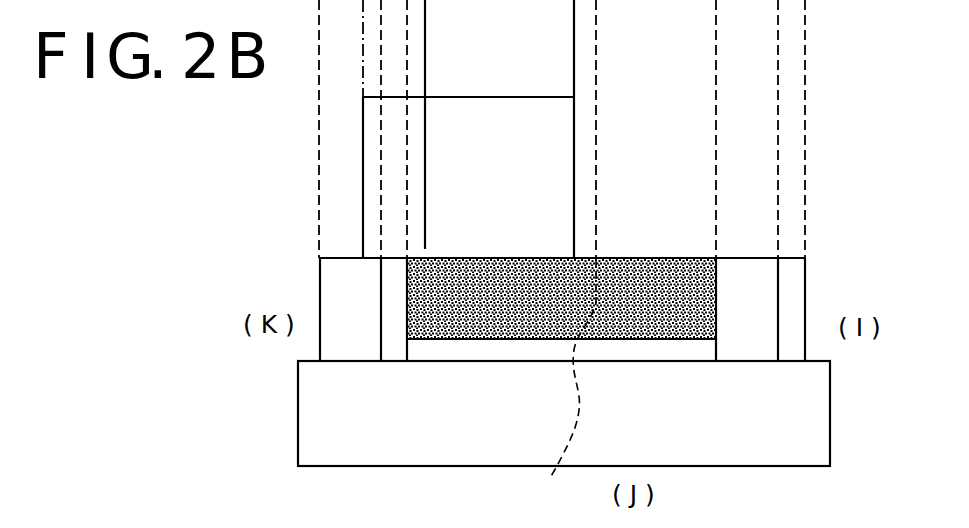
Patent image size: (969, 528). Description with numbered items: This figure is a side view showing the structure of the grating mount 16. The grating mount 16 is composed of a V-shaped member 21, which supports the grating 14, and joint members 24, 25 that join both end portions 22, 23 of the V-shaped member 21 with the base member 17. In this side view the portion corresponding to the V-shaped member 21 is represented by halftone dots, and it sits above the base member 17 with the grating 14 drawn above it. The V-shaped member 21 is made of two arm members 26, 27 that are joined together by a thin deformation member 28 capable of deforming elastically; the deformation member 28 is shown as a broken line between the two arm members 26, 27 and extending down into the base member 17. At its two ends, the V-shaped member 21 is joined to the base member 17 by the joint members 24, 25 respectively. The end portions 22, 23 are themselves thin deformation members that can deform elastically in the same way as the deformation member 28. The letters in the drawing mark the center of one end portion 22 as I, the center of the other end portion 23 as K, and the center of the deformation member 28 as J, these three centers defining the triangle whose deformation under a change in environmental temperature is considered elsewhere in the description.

The grating 14 is at (493, 108).
The grating mount 16 is at (629, 208).
The base member 17 is at (318, 436).
The V-shaped member 21 is at (712, 242).
The end portion 22 is at (716, 291).
The end portion 23 is at (407, 292).
The joint member 24 is at (805, 242).
The joint member 25 is at (403, 242).
The arm member 26 is at (520, 312).
The arm member 27 is at (677, 312).
The deformation member 28 is at (560, 382).